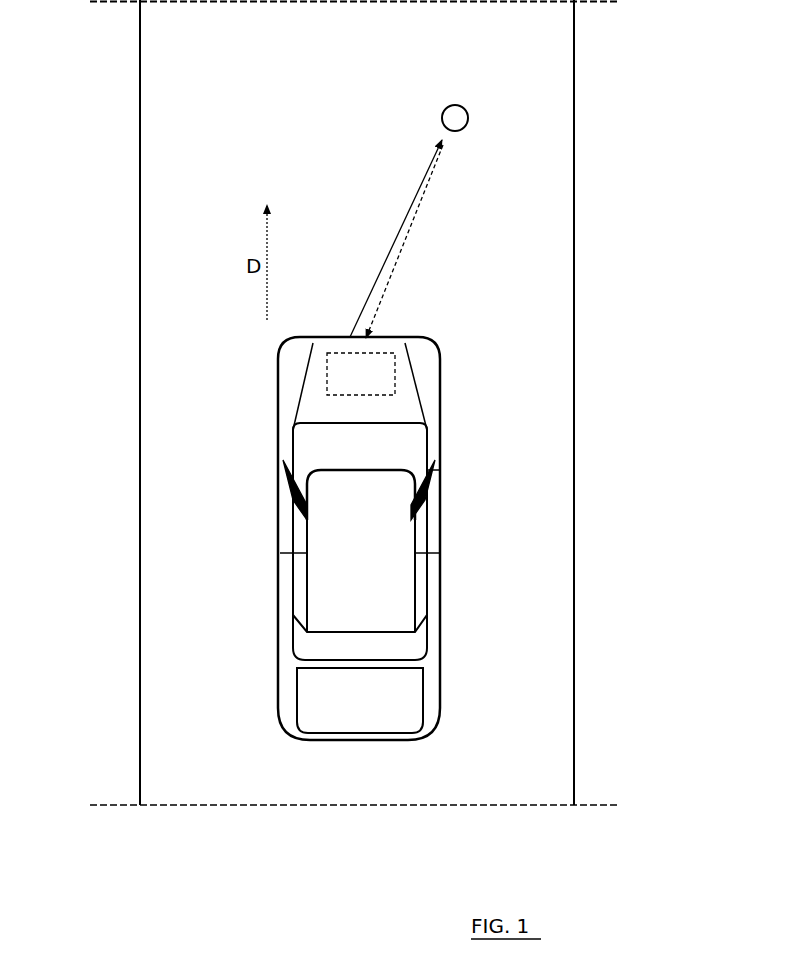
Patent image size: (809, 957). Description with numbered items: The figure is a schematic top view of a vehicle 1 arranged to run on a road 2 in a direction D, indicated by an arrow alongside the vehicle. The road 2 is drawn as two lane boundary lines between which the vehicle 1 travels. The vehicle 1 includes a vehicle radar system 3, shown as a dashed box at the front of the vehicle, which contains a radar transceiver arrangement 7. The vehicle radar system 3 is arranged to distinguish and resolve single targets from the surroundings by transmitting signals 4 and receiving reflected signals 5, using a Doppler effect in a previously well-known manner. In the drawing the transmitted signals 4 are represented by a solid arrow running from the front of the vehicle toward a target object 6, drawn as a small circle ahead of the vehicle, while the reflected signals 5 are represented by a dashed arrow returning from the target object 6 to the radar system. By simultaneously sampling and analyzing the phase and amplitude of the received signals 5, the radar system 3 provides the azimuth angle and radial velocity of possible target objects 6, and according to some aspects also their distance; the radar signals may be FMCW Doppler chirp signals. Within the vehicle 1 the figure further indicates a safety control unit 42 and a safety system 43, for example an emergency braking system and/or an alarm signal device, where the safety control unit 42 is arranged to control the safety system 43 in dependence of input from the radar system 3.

The vehicle 1 is at (370, 532).
The road 2 is at (205, 558).
The vehicle radar system 3 is at (327, 361).
The transmitted signals 4 is at (397, 233).
The reflected signals 5 is at (425, 207).
The target objects 6 is at (475, 107).
The radar transceiver arrangement 7 is at (327, 373).
The safety control unit 42 is at (316, 612).
The safety system 43 is at (397, 565).